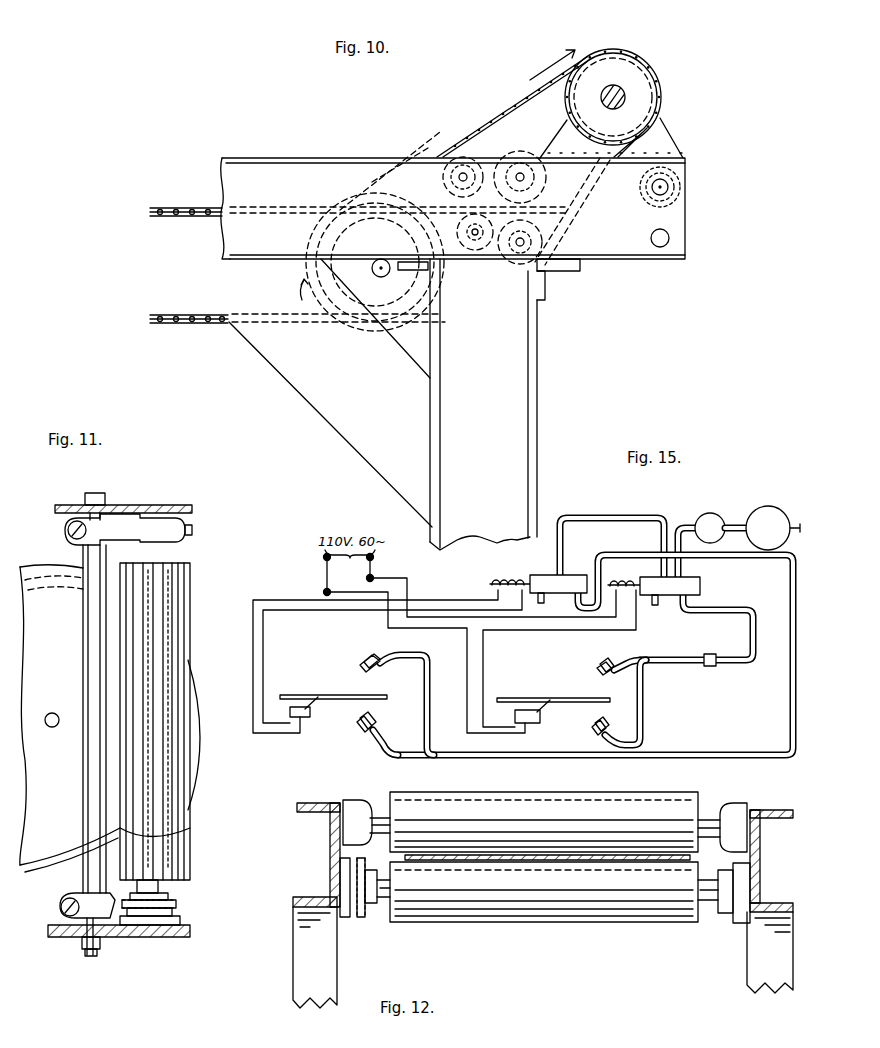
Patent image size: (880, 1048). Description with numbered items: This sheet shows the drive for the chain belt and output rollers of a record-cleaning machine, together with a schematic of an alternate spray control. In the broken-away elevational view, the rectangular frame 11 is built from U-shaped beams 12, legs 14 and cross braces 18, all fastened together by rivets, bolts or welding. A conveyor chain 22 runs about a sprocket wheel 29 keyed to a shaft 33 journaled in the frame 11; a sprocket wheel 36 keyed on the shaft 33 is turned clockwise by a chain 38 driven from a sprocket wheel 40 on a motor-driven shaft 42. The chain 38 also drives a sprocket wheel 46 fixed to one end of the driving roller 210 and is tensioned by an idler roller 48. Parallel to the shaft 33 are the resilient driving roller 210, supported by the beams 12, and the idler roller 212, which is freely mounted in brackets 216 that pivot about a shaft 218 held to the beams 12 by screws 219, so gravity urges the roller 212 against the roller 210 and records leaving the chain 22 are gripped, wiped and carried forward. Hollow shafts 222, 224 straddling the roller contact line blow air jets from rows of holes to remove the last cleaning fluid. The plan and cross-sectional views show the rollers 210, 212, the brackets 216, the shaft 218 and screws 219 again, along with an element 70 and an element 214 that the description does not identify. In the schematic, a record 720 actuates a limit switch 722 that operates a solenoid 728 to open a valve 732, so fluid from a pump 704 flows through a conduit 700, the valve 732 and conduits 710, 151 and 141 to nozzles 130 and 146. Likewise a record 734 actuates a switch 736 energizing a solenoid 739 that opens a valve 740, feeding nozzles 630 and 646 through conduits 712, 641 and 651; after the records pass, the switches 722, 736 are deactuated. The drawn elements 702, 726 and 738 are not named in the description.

In FIG. 10, the frame 11 is at (413, 137).
In FIG. 10, the U-shaped beam 12 is at (529, 124).
In FIG. 11, the U-shaped beam 12 is at (183, 505).
In FIG. 10, the leg 14 is at (533, 464).
In FIG. 10, the cross brace 18 is at (387, 477).
In FIG. 10, the conveyor chain 22 is at (152, 218).
In FIG. 10, the sprocket wheel 29 is at (337, 336).
In FIG. 10, the shaft 33 is at (381, 278).
In FIG. 10, the sprocket wheel 36 is at (375, 158).
In FIG. 10, the chain 38 is at (510, 102).
In FIG. 10, the sprocket wheel 40 is at (640, 109).
In FIG. 10, the shaft 42 is at (626, 93).
In FIG. 10, the sprocket wheel 46 is at (553, 277).
In FIG. 11, the sprocket wheel 46 is at (178, 906).
In FIG. 10, the idler roller 48 is at (473, 270).
In FIG. 11, the platen 70 is at (200, 697).
In FIG. 12, the platen 70 is at (682, 862).
In FIG. 15, the nozzle 130 is at (364, 664).
In FIG. 15, the conduit 141 is at (420, 678).
In FIG. 15, the nozzle 146 is at (365, 726).
In FIG. 15, the conduit 151 is at (385, 751).
In FIG. 10, the driving roller 210 is at (574, 215).
In FIG. 11, the driving roller 210 is at (190, 864).
In FIG. 12, the driving roller 210 is at (488, 923).
In FIG. 10, the idler roller 212 is at (557, 178).
In FIG. 11, the idler roller 212 is at (190, 588).
In FIG. 12, the idler roller 212 is at (612, 800).
In FIG. 12, the sprocket 214 is at (361, 917).
In FIG. 10, the bracket 216 is at (418, 158).
In FIG. 11, the bracket 216 is at (188, 534).
In FIG. 10, the shaft 218 is at (460, 152).
In FIG. 11, the shaft 218 is at (83, 553).
In FIG. 11, the screw 219 is at (102, 500).
In FIG. 10, the hollow shaft 222 is at (669, 188).
In FIG. 10, the hollow shaft 224 is at (670, 238).
In FIG. 15, the nozzle 630 is at (598, 668).
In FIG. 15, the conduit 641 is at (615, 654).
In FIG. 15, the nozzle 646 is at (592, 731).
In FIG. 15, the conduit 651 is at (645, 706).
In FIG. 15, the conduit 700 is at (620, 515).
In FIG. 15, the pressure regulator 702 is at (712, 512).
In FIG. 15, the pump 704 is at (780, 506).
In FIG. 15, the conduit 710 is at (790, 698).
In FIG. 15, the conduit 712 is at (752, 612).
In FIG. 15, the record 720 is at (312, 686).
In FIG. 15, the limit switch 722 is at (310, 712).
In FIG. 15, the electrical circuit wire 726 is at (253, 625).
In FIG. 15, the solenoid 728 is at (499, 580).
In FIG. 15, the valve 732 is at (572, 558).
In FIG. 15, the record 734 is at (536, 690).
In FIG. 15, the switch 736 is at (540, 716).
In FIG. 15, the electrical wire 738 is at (470, 670).
In FIG. 15, the solenoid 739 is at (613, 580).
In FIG. 15, the valve 740 is at (700, 578).